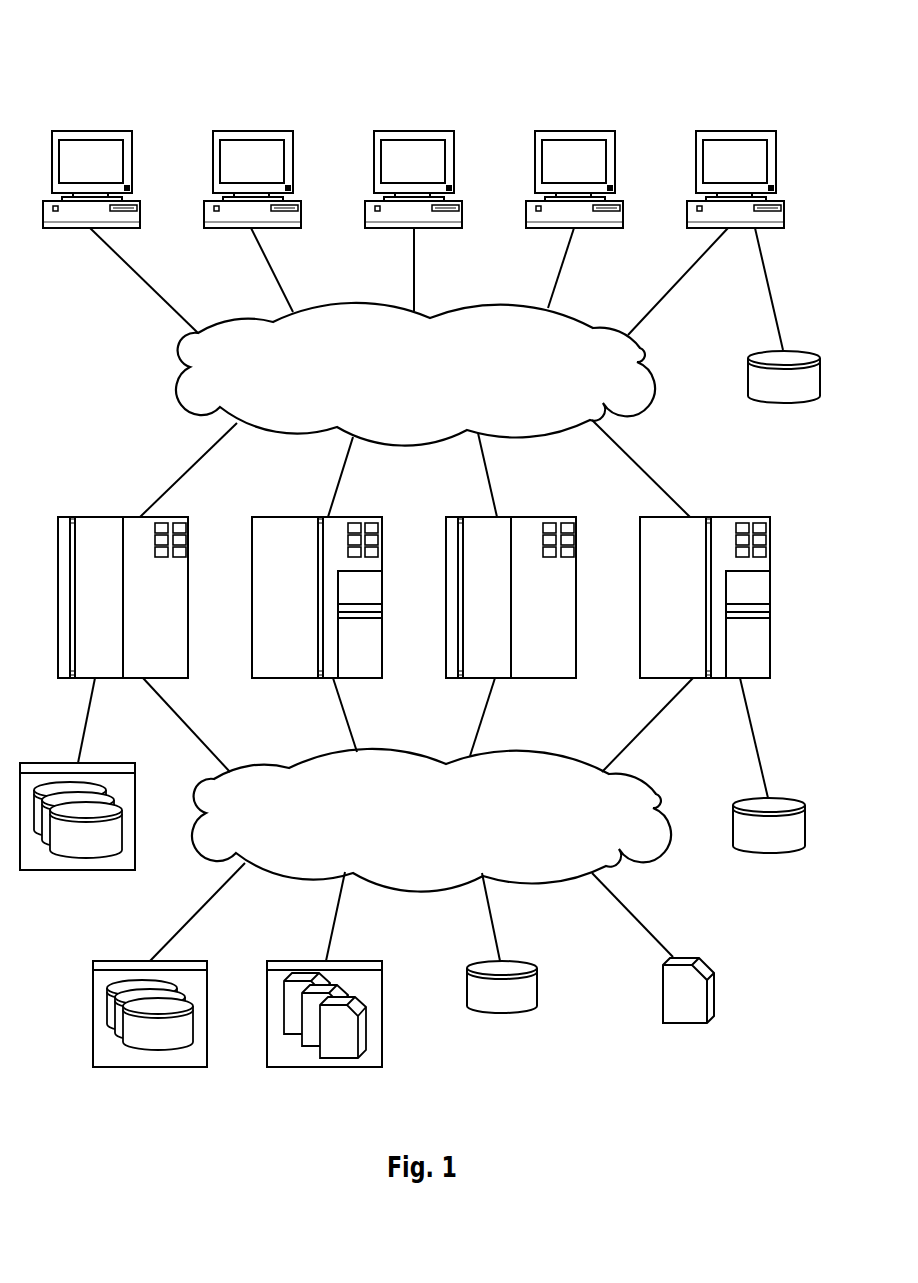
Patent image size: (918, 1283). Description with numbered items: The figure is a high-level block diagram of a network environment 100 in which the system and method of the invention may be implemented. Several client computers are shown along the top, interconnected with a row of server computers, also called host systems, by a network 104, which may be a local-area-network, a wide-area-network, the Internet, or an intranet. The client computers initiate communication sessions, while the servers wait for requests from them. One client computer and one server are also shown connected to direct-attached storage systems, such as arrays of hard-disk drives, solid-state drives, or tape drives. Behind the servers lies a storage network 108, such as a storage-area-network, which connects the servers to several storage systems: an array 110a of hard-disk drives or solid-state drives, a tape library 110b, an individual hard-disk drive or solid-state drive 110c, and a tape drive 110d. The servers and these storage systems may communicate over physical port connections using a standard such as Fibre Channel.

The network environment 100 is at (158, 64).
The network 104 is at (545, 388).
The storage network 108 is at (528, 830).
The array of hard-disk drives or solid-state drives 110a is at (148, 1067).
The tape library 110b is at (325, 1067).
The individual hard-disk drive or solid-state drive 110c is at (500, 1013).
The tape drive 110d is at (682, 1023).